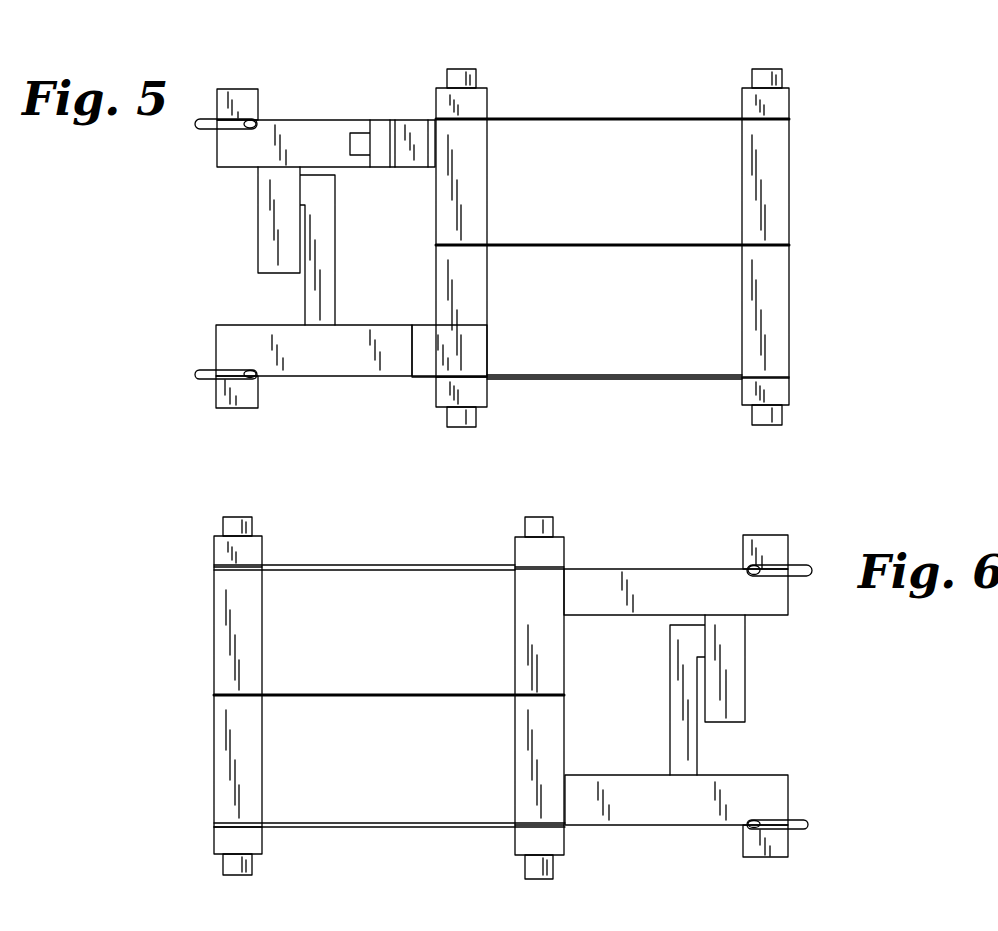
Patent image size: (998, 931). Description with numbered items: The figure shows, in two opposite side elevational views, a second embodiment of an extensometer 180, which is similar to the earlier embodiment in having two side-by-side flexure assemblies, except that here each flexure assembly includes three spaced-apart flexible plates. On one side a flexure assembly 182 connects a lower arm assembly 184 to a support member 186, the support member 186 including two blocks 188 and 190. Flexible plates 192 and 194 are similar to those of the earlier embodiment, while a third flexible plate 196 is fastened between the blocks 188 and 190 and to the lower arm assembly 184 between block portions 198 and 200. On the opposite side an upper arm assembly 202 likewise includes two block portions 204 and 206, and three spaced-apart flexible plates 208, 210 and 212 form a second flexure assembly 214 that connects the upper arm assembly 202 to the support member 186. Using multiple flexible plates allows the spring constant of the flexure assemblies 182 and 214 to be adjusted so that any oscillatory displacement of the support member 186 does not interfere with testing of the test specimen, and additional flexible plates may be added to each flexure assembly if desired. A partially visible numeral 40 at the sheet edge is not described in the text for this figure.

In FIG. 5, the partial numeral at sheet edge 40 is at (8, 347).
In FIG. 5, the extensometer 180 is at (390, 83).
In FIG. 6, the extensometer 180 is at (492, 523).
In FIG. 5, the flexure assembly 182 is at (613, 83).
In FIG. 5, the lower arm assembly 184 is at (374, 395).
In FIG. 6, the lower arm assembly 184 is at (638, 830).
In FIG. 5, the support member 186 is at (822, 199).
In FIG. 6, the support member 186 is at (203, 684).
In FIG. 5, the block 188 is at (790, 145).
In FIG. 6, the block 188 is at (263, 628).
In FIG. 5, the block 190 is at (790, 300).
In FIG. 6, the block 190 is at (263, 770).
In FIG. 5, the flexible plate 192 is at (672, 118).
In FIG. 5, the flexible plate 194 is at (652, 375).
In FIG. 5, the third flexible plate 196 is at (656, 246).
In FIG. 5, the block portion 198 is at (488, 300).
In FIG. 5, the block portion 200 is at (488, 200).
In FIG. 5, the upper arm assembly 202 is at (340, 110).
In FIG. 6, the upper arm assembly 202 is at (645, 541).
In FIG. 6, the block portion 204 is at (515, 640).
In FIG. 6, the block portion 206 is at (515, 752).
In FIG. 6, the flexible plate 208 is at (378, 566).
In FIG. 6, the flexible plate 210 is at (350, 695).
In FIG. 6, the flexible plate 212 is at (362, 823).
In FIG. 6, the second flexure assembly 214 is at (368, 533).